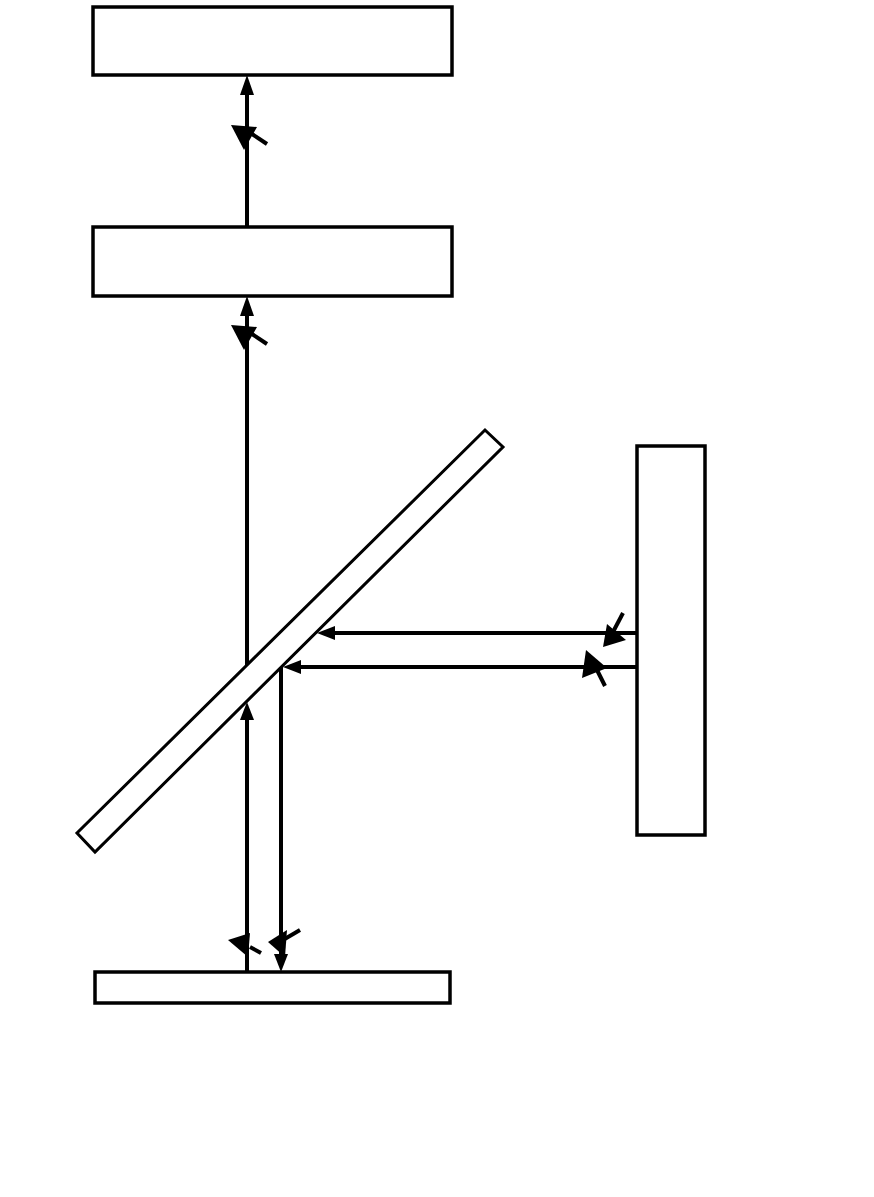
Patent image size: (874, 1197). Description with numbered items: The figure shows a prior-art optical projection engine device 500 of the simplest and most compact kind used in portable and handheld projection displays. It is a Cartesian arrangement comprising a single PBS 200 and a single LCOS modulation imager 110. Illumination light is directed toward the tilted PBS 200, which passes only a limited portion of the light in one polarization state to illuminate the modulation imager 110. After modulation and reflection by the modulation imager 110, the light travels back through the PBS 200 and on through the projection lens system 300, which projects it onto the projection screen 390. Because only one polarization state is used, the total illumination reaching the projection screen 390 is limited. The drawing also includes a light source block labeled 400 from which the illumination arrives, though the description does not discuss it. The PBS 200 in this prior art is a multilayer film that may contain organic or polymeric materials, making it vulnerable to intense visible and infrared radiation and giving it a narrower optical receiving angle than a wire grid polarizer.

The LCOS modulation imager 110 is at (450, 980).
The PBS 200 is at (83, 846).
The projection lens system 300 is at (452, 262).
The projection screen 390 is at (452, 40).
The light source 400 is at (673, 835).
The optical projection engine device 500 is at (624, 347).